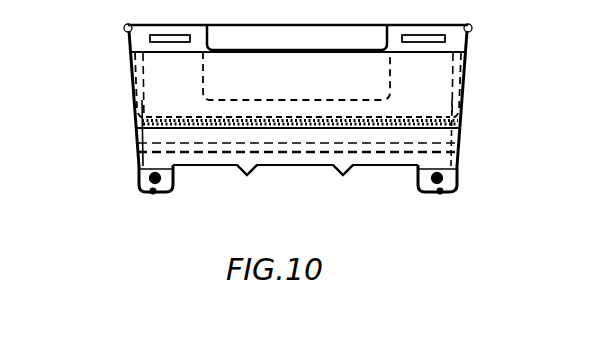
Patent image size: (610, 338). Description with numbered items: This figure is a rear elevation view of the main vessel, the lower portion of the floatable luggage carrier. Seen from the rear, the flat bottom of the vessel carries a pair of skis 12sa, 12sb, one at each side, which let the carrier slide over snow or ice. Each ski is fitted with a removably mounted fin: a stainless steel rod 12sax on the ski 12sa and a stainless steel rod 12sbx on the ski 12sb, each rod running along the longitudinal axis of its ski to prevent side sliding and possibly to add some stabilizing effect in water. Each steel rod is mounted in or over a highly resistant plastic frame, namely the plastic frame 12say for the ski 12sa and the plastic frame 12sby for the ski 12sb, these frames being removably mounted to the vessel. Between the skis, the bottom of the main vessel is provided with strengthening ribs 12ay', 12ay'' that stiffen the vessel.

The ski 12sb is at (140, 162).
The plastic frame 12sby is at (136, 186).
The stainless steel rod 12sbx is at (152, 196).
The strengthening rib 12ay' is at (193, 216).
The strengthening rib 12ay'' is at (392, 223).
The ski 12sa is at (447, 164).
The plastic frame 12say is at (459, 184).
The stainless steel rod 12sax is at (443, 197).